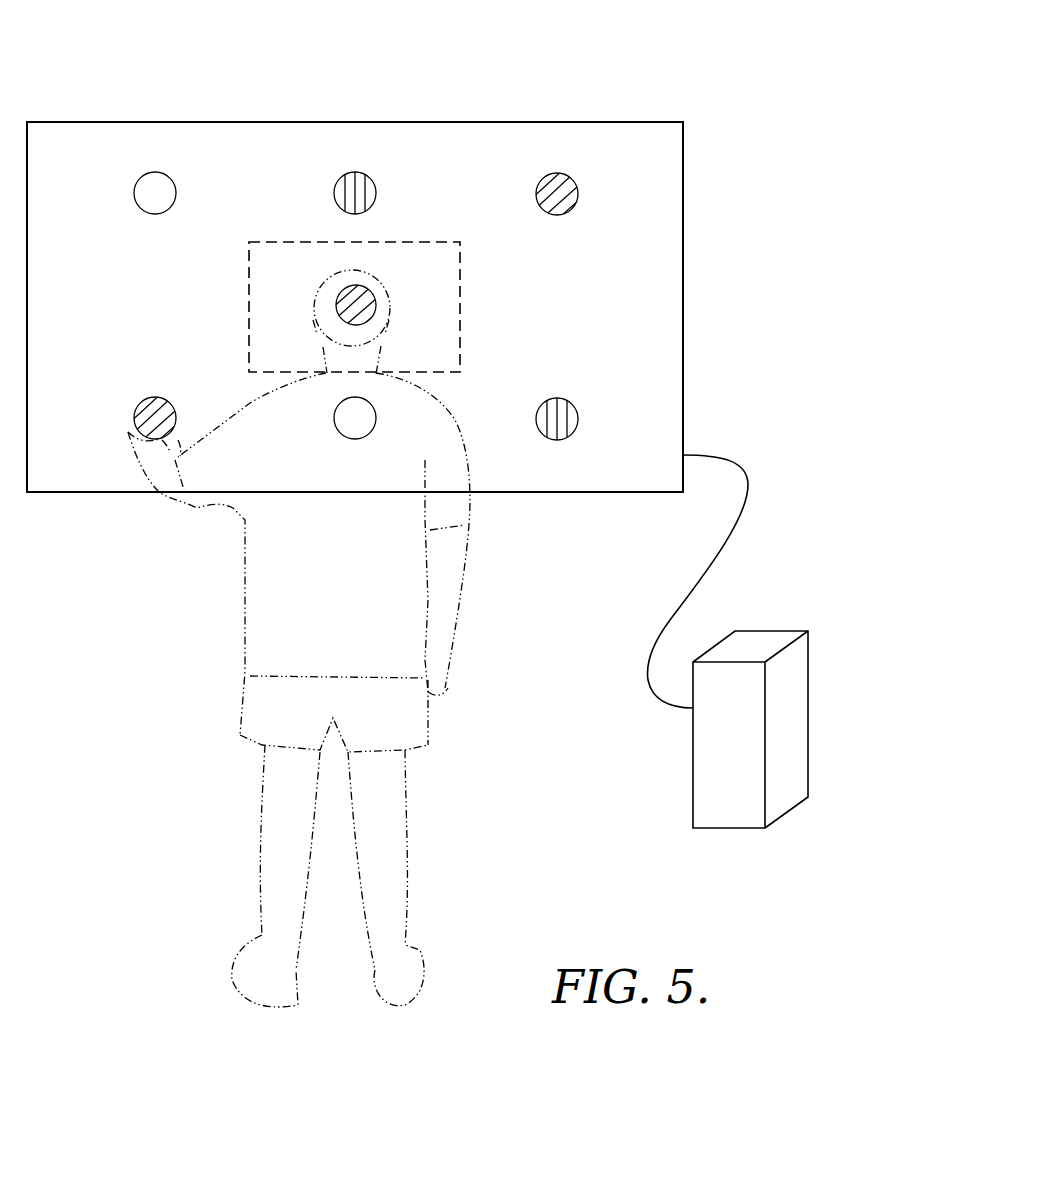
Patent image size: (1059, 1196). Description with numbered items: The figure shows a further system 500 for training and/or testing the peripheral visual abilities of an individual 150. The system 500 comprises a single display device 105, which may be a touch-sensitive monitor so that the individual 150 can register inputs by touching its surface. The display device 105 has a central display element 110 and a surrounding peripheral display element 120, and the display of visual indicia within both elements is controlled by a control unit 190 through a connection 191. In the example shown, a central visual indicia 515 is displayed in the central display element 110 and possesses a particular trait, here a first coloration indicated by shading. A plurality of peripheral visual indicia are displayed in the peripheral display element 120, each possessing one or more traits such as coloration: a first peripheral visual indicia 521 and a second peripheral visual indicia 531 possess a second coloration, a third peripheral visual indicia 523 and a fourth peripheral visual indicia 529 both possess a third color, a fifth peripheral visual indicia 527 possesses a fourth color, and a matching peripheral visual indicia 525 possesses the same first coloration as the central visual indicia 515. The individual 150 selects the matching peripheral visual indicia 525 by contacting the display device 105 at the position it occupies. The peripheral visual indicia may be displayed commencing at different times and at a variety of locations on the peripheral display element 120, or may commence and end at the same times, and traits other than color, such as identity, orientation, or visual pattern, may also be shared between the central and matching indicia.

The system 500 is at (162, 46).
The display device 105 is at (685, 345).
The peripheral display element 120 is at (490, 126).
The central display element 110 is at (420, 226).
The second peripheral visual indicia 531 is at (158, 173).
The fourth peripheral visual indicia 529 is at (357, 173).
The fifth peripheral visual indicia 527 is at (559, 174).
The central visual indicia 515 is at (336, 304).
The matching peripheral visual indicia 525 is at (157, 399).
The first peripheral visual indicia 521 is at (354, 439).
The third peripheral visual indicia 523 is at (558, 400).
The individual 150 is at (245, 582).
The connection 191 is at (703, 574).
The control unit 190 is at (737, 829).